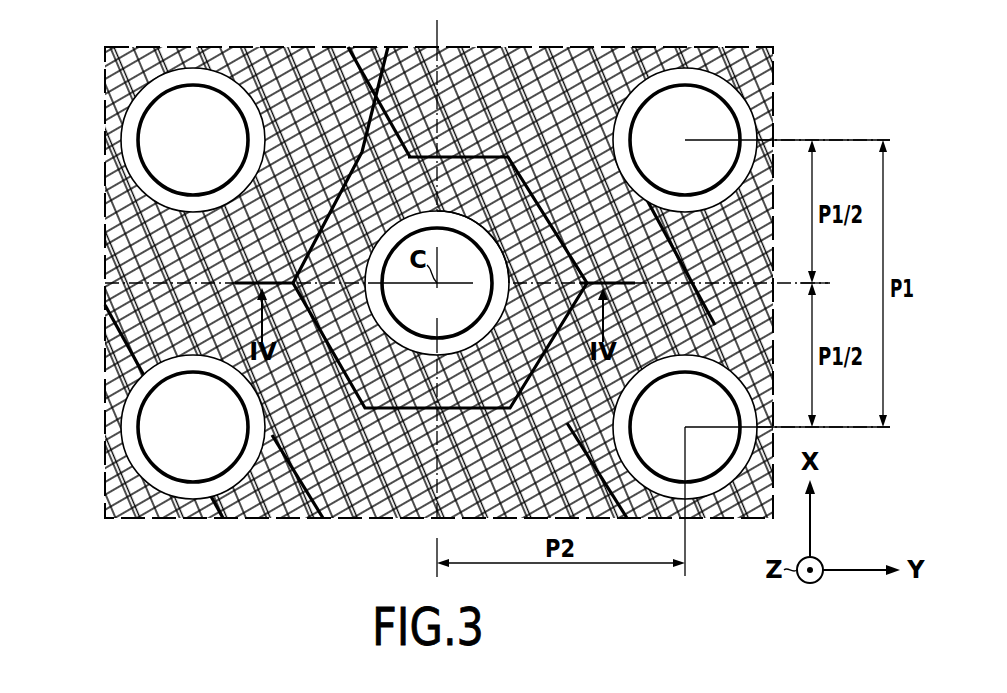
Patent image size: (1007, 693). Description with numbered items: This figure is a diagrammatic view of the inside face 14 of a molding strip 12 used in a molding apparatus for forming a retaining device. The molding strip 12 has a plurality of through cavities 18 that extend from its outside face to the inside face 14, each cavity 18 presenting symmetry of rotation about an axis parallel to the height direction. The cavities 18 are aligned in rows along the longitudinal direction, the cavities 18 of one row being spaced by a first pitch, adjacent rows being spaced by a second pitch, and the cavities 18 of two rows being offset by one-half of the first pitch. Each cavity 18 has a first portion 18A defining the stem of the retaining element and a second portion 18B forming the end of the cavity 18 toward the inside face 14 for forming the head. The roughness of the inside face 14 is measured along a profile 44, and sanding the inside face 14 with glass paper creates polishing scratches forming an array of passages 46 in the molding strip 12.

The molding strip 12 is at (210, 522).
The inside face 14 is at (120, 326).
The through cavities 18 is at (177, 154).
The first portion 18A is at (412, 333).
The second portion 18B is at (462, 347).
The profile 44 is at (538, 202).
The passages 46 is at (258, 86).